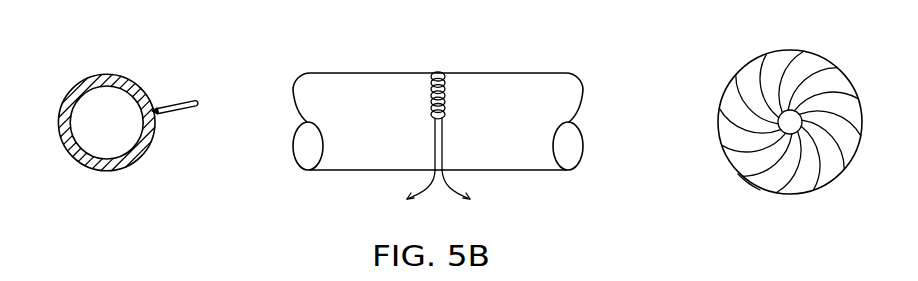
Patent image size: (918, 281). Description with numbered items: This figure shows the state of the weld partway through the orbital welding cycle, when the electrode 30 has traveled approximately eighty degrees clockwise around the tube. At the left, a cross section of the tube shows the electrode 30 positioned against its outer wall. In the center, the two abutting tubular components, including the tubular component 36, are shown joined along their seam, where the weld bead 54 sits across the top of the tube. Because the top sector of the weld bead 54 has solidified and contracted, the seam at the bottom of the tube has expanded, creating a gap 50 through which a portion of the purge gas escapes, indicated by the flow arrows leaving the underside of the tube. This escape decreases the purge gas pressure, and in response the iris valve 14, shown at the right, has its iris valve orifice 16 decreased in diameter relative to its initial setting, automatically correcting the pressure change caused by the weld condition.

The fan 14 is at (732, 97).
The iris valve orifice 16 is at (738, 174).
The electrode 30 is at (163, 107).
The tubular component 36 is at (438, 95).
The gap 50 is at (441, 158).
The weld bead 54 is at (437, 72).